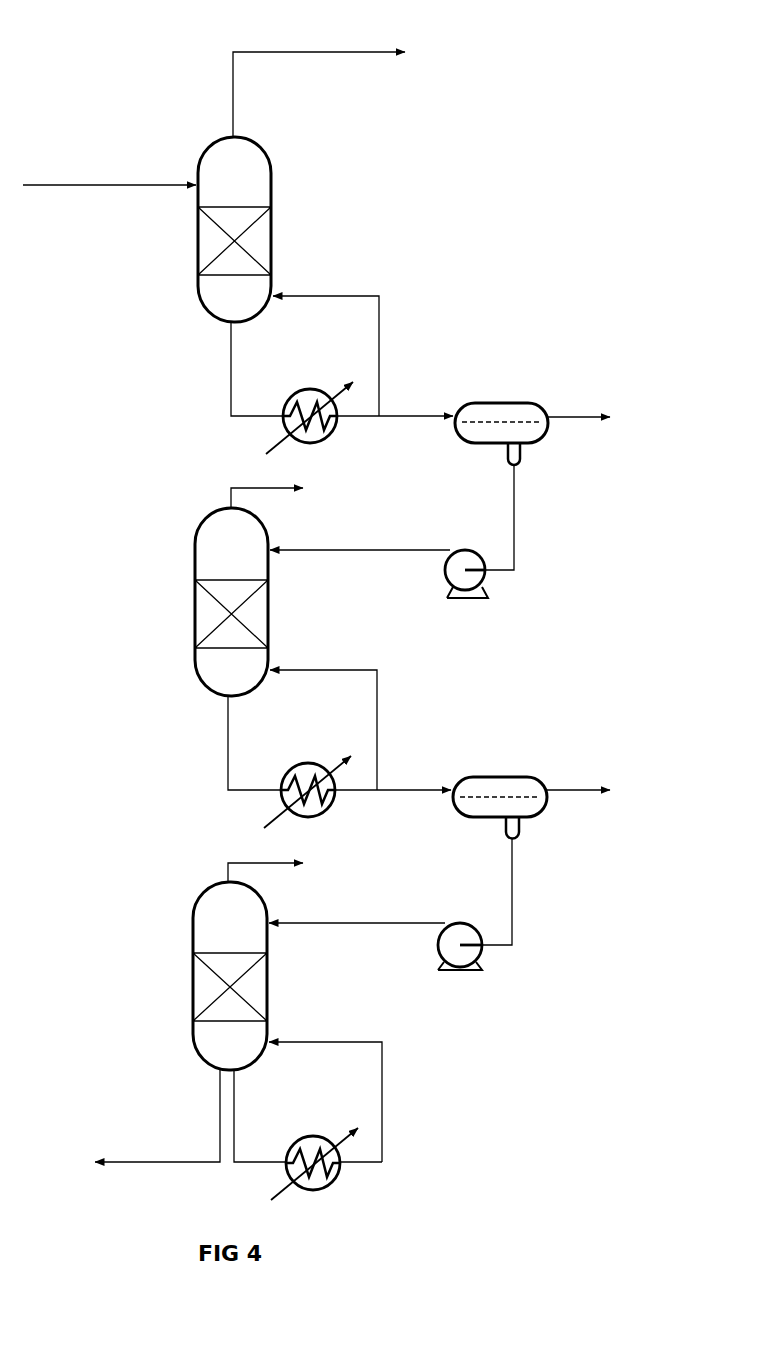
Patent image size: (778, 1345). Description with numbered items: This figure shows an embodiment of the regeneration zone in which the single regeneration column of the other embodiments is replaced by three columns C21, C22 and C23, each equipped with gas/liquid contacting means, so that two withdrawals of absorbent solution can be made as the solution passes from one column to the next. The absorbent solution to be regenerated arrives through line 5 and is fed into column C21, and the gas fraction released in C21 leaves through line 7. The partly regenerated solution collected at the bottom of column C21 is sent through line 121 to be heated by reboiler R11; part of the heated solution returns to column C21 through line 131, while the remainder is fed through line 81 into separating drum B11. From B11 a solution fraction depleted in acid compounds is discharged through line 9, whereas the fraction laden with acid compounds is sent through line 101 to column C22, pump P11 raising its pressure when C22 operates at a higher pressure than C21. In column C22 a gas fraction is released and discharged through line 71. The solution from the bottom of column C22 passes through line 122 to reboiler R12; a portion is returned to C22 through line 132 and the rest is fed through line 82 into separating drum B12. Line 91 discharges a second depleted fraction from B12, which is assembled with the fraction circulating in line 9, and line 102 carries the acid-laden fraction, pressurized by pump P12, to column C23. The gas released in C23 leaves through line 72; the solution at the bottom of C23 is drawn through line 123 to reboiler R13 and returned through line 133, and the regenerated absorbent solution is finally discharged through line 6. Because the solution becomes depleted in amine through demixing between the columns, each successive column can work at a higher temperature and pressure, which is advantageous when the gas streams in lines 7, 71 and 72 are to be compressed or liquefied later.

The line 5 is at (99, 184).
The line 7 is at (304, 50).
The column C21 is at (194, 233).
The line 131 is at (319, 292).
The line 121 is at (231, 355).
The reboiler R11 is at (324, 443).
The line 71 is at (239, 486).
The line 81 is at (424, 416).
The separating drum B11 is at (508, 404).
The line 9 is at (577, 414).
The line 101 is at (411, 547).
The pump P11 is at (479, 545).
The column C22 is at (192, 607).
The line 132 is at (316, 667).
The line 122 is at (228, 729).
The reboiler R12 is at (322, 817).
The line 72 is at (238, 859).
The line 82 is at (404, 786).
The separating drum B12 is at (506, 776).
The line 91 is at (577, 789).
The line 102 is at (410, 919).
The pump P12 is at (475, 917).
The column C23 is at (192, 981).
The line 133 is at (318, 1036).
The line 123 is at (234, 1102).
The line 6 is at (136, 1162).
The reboiler R13 is at (328, 1190).